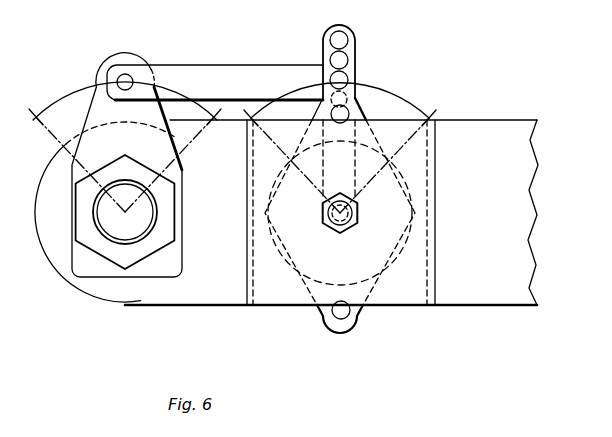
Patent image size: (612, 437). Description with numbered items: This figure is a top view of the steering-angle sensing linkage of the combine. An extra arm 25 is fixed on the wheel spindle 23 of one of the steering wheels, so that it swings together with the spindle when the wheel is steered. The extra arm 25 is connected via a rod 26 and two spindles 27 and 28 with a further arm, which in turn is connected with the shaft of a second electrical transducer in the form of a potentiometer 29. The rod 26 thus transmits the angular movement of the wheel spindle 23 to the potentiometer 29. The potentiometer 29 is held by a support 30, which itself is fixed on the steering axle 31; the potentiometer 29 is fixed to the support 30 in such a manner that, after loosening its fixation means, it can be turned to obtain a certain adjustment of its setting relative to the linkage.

The wheel spindle 23 is at (59, 266).
The extra arm 25 is at (88, 100).
The rod 26 is at (236, 72).
The spindle 27 is at (126, 74).
The spindle 28 is at (348, 78).
The potentiometer 29 is at (410, 155).
The support 30 is at (438, 305).
The steering axle 31 is at (501, 304).